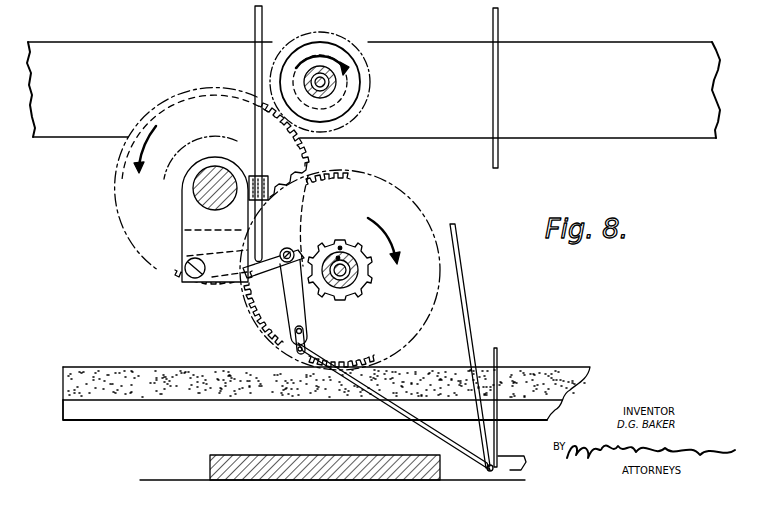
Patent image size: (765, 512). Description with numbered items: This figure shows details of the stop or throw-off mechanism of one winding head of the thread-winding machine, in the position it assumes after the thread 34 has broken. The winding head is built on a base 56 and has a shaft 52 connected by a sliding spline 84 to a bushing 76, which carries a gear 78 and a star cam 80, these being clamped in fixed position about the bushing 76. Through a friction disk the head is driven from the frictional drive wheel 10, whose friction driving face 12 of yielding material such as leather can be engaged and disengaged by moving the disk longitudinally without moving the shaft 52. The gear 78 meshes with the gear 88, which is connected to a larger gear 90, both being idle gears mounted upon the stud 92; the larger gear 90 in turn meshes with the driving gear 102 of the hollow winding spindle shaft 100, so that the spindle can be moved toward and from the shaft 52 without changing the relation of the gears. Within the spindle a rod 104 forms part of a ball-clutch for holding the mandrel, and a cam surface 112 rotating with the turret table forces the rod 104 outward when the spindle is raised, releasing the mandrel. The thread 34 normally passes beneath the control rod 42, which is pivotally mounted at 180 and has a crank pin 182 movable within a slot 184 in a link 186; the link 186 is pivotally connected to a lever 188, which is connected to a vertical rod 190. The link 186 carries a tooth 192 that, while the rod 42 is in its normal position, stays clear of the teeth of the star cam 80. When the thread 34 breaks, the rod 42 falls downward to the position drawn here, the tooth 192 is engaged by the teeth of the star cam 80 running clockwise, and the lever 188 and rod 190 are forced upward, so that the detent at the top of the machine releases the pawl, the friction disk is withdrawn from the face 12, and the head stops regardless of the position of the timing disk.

The frictional drive wheel 10 is at (305, 411).
The friction driving face 12 is at (127, 373).
The thread 34 is at (498, 98).
The control element (rod) of the knock-off device 42 is at (333, 460).
The shaft 52 is at (346, 285).
The base of the winding head 56 is at (210, 457).
The bushing 76 is at (361, 279).
The gear 78 is at (432, 212).
The star cam 80 is at (333, 258).
The sliding spline 84 is at (345, 264).
The gear 88 is at (170, 210).
The larger gear 90 is at (318, 150).
The stud 92 is at (215, 176).
The hollow winding spindle shaft 100 is at (335, 90).
The driving gear 102 is at (360, 56).
The rod 104 is at (332, 82).
The cam surface 112 is at (612, 52).
The pivot 180 is at (273, 365).
The crank pin 182 is at (303, 334).
The slot 184 is at (306, 346).
The link 186 is at (290, 285).
The lever 188 is at (290, 248).
The vertical rod 190 is at (255, 20).
The tooth 192 is at (307, 250).